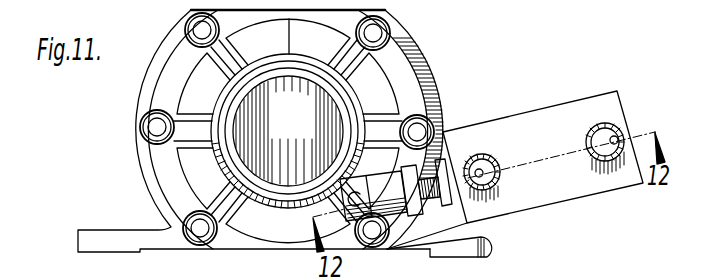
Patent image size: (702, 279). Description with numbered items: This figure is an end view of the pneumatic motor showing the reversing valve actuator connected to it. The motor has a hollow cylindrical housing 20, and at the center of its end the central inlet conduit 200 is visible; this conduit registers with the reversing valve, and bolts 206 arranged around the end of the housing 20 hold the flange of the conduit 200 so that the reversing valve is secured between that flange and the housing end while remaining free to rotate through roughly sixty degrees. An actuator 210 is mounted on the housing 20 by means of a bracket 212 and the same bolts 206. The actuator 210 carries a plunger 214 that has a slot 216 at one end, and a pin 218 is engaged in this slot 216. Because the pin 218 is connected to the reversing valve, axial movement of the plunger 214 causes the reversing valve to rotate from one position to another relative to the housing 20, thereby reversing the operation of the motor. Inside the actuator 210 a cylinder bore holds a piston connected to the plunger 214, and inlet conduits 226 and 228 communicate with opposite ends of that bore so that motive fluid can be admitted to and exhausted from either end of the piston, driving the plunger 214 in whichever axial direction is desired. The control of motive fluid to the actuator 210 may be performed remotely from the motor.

The housing 20 is at (423, 52).
The central inlet conduit 200 is at (283, 88).
The bolts 206 is at (428, 122).
The actuator 210 is at (578, 86).
The bracket 212 is at (483, 121).
The plunger 214 is at (441, 197).
The slot 216 is at (367, 196).
The pin 218 is at (356, 184).
The inlet conduit 226 is at (613, 136).
The inlet conduit 228 is at (484, 166).